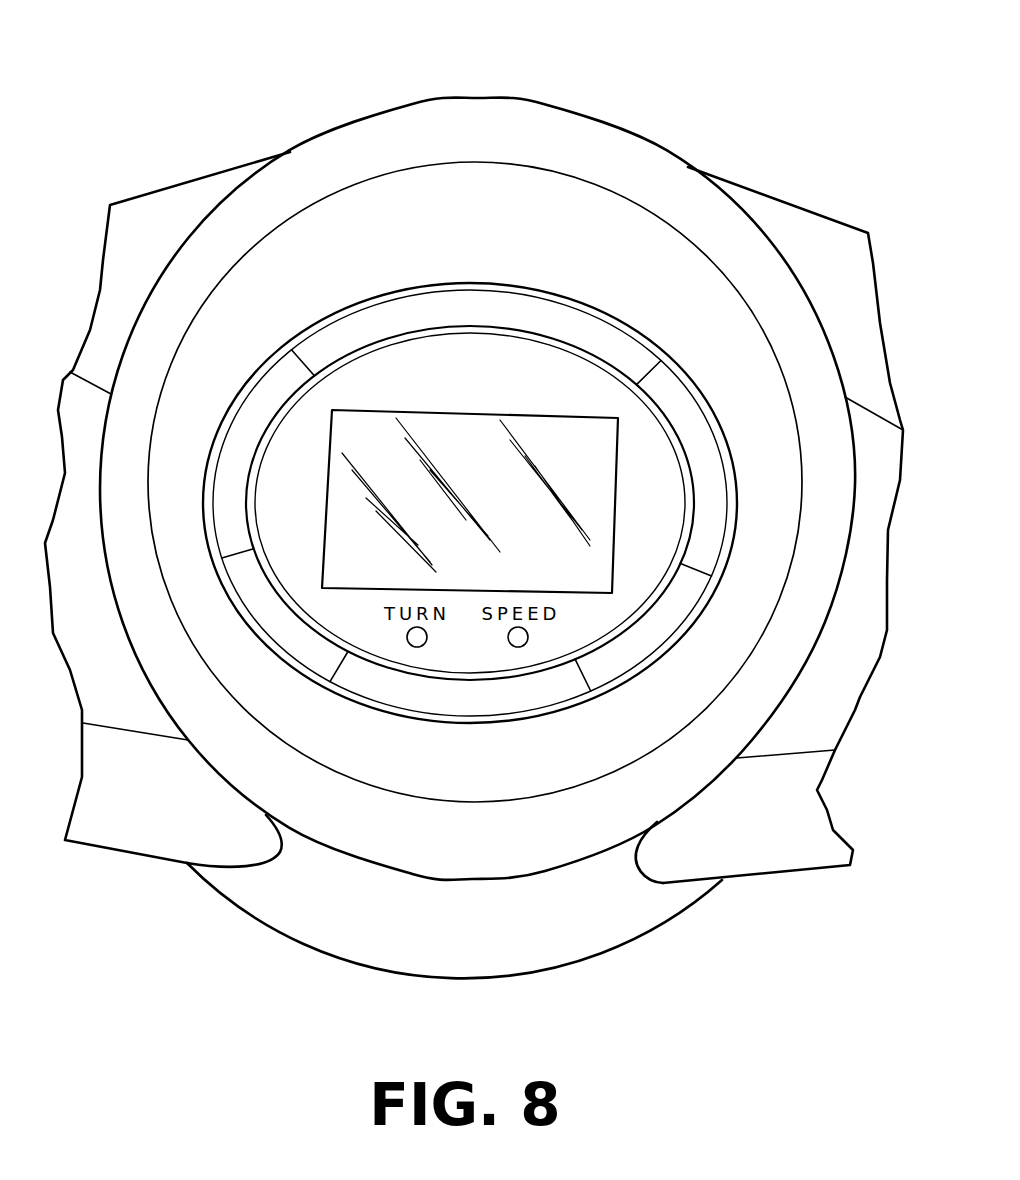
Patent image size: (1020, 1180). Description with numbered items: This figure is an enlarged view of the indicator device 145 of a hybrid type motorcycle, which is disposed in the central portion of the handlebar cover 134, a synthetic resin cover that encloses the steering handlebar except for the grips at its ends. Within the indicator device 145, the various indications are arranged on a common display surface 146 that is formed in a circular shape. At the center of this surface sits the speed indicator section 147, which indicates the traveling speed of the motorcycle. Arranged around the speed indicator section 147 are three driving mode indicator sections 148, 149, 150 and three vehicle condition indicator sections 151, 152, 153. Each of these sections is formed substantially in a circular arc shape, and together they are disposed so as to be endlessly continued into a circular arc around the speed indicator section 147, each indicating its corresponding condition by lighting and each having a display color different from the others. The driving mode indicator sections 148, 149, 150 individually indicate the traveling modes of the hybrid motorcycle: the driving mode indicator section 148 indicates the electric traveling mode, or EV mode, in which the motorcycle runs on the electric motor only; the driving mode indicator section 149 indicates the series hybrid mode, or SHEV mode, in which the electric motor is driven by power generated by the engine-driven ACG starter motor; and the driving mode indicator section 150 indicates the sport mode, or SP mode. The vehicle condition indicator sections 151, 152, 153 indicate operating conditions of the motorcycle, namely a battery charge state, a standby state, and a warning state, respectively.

The handlebar cover 134 is at (808, 226).
The indicator device 145 is at (651, 130).
The common display surface 146 is at (448, 175).
The speed indicator section 147 is at (513, 420).
The driving mode indicator section 148 is at (622, 664).
The driving mode indicator section 149 is at (553, 322).
The driving mode indicator section 150 is at (293, 651).
The vehicle condition indicator section 151 is at (251, 387).
The vehicle condition indicator section 152 is at (672, 378).
The vehicle condition indicator section 153 is at (366, 690).